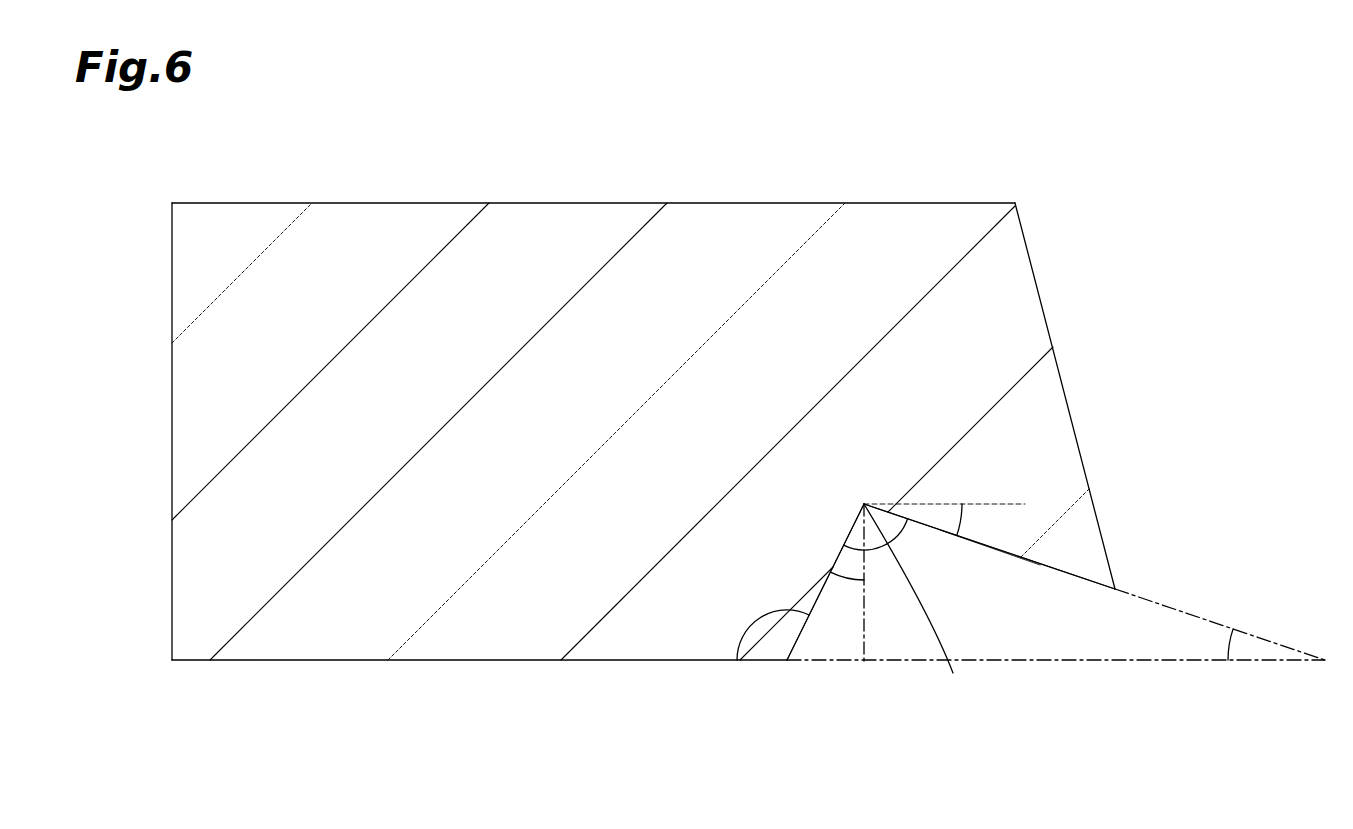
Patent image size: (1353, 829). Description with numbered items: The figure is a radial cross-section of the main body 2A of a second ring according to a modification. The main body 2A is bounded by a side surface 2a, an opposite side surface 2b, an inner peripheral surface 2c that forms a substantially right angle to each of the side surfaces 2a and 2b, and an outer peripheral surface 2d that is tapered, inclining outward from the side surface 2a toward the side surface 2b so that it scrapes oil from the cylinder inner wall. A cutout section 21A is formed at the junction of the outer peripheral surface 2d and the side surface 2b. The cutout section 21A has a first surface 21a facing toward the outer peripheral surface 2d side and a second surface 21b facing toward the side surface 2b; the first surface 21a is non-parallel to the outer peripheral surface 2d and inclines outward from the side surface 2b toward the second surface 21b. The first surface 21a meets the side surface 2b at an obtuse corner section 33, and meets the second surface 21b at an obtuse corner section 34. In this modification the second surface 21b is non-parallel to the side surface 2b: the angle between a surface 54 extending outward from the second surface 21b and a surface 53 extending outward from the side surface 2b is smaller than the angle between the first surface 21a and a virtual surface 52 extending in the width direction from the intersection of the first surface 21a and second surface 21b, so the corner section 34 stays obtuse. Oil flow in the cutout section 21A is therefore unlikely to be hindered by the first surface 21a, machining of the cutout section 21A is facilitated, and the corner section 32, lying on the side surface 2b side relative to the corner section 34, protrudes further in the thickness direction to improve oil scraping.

The main body 2A is at (398, 233).
The side surface 2a is at (623, 203).
The side surface 2b is at (488, 662).
The inner peripheral surface 2c is at (172, 412).
The outer peripheral surface 2d is at (1057, 368).
The cutout section 21A is at (953, 613).
The first surface 21a is at (817, 602).
The second surface 21b is at (1040, 565).
The corner section 32 is at (1118, 587).
The corner section (third corner section) 33 is at (788, 662).
The corner section (fourth corner section) 34 is at (917, 606).
The surface in the width direction 52 is at (860, 652).
The surface extending outward from the side surface 53 is at (1085, 662).
The surface extending outward from the second surface 54 is at (1197, 610).